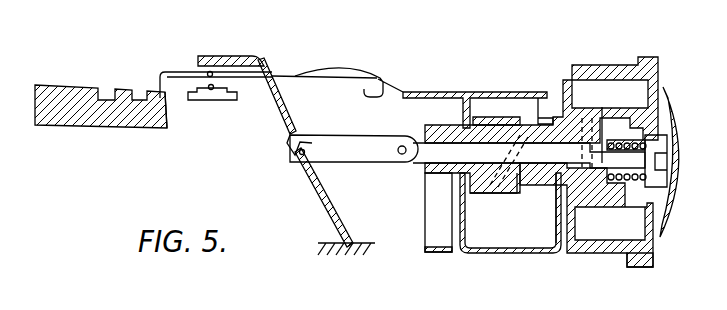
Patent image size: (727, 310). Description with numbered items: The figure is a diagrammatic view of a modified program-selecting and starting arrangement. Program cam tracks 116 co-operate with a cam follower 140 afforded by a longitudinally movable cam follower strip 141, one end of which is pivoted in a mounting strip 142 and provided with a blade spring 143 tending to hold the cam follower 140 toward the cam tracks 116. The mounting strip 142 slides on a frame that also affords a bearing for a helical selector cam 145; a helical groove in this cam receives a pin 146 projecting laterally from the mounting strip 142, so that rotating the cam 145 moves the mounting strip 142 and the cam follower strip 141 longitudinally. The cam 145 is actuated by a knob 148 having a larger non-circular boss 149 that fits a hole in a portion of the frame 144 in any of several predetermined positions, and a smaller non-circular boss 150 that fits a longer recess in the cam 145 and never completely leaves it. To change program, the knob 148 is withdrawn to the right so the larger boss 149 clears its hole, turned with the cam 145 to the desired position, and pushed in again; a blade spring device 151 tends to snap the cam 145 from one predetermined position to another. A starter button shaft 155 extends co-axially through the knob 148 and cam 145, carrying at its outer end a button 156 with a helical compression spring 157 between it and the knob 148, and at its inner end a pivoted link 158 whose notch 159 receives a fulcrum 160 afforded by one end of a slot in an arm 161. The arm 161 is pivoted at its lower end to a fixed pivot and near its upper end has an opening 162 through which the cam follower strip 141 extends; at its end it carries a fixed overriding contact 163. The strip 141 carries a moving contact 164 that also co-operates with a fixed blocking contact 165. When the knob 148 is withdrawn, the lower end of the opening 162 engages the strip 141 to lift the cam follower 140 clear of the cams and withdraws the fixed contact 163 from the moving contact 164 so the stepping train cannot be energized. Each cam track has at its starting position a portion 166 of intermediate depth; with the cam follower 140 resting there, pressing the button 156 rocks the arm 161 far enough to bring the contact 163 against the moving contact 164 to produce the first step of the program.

The program cam tracks 116 is at (112, 86).
The cam follower 140 is at (160, 80).
The cam follower strip 141 is at (284, 71).
The mounting strip 142 is at (504, 94).
The blade spring 143 is at (376, 81).
The frame 144 is at (515, 255).
The helical selector cam 145 is at (522, 196).
The pin 146 is at (542, 103).
The knob 148 is at (632, 262).
The larger non-circular boss 149 is at (551, 254).
The smaller non-circular boss 150 is at (537, 173).
The blade spring device 151 is at (436, 212).
The starter button shaft 155 is at (541, 112).
The button 156 is at (670, 238).
The helical compression spring 157 is at (586, 215).
The pivoted link 158 is at (381, 153).
The notch 159 is at (289, 147).
The fulcrum 160 is at (302, 158).
The arm 161 is at (328, 218).
The opening 162 is at (268, 72).
The fixed overriding contact 163 is at (210, 57).
The moving contact 164 is at (208, 73).
The fixed blocking contact 165 is at (210, 89).
The portion of intermediate depth 166 is at (162, 97).